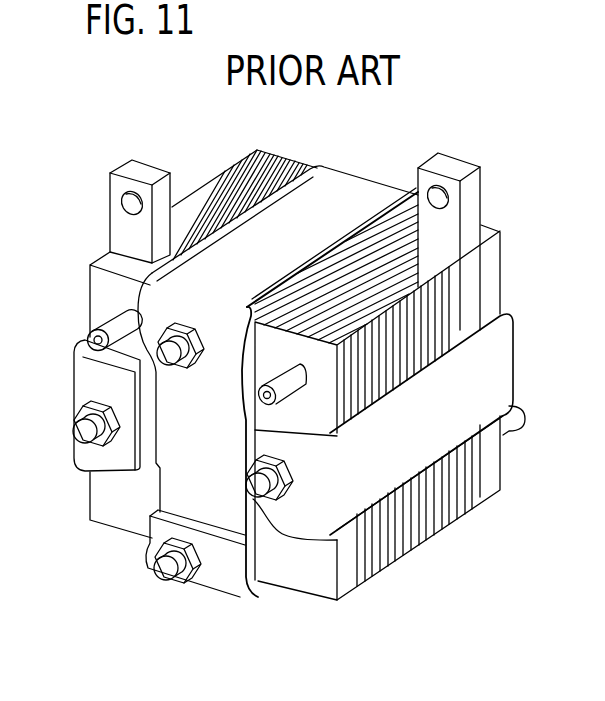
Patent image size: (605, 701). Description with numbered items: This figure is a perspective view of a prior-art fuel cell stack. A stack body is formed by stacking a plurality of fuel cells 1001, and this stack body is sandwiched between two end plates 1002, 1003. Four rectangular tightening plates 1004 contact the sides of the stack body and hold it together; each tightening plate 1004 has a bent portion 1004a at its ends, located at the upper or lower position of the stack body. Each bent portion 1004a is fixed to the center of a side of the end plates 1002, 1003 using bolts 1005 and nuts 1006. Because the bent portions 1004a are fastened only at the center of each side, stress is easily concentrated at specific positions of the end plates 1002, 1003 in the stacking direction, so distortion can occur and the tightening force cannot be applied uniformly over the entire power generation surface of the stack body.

The fuel cells 1001 is at (215, 184).
The end plate 1002 is at (495, 467).
The end plate 1003 is at (315, 580).
The tightening plate 1004 is at (330, 183).
The bent portion 1004a is at (150, 300).
The bolt 1005 is at (185, 362).
The nut 1006 is at (202, 337).